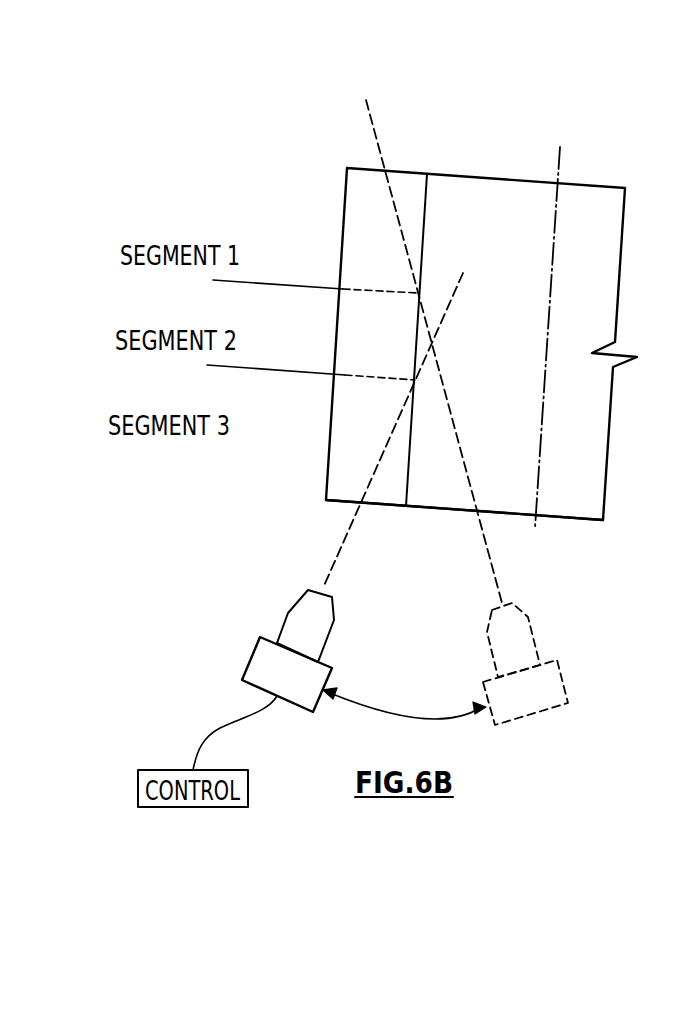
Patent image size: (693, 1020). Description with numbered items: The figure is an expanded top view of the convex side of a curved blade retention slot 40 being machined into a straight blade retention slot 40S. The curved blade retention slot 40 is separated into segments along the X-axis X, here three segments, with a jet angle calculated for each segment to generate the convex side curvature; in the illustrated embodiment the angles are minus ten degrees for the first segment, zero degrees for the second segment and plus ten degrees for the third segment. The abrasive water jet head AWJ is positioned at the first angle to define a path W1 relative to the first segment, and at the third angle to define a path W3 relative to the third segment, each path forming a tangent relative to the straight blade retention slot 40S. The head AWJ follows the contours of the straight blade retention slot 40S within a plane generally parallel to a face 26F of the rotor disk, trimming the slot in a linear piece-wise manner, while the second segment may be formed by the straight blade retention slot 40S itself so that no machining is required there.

The curved blade retention slot 40 is at (513, 138).
The straight blade retention slot 40S is at (423, 237).
The face of the rotor disk 26F is at (335, 503).
The AWJ path W1 is at (374, 130).
The AWJ path W3 is at (344, 542).
The X-axis X is at (560, 162).
The abrasive water jet head AWJ is at (250, 655).